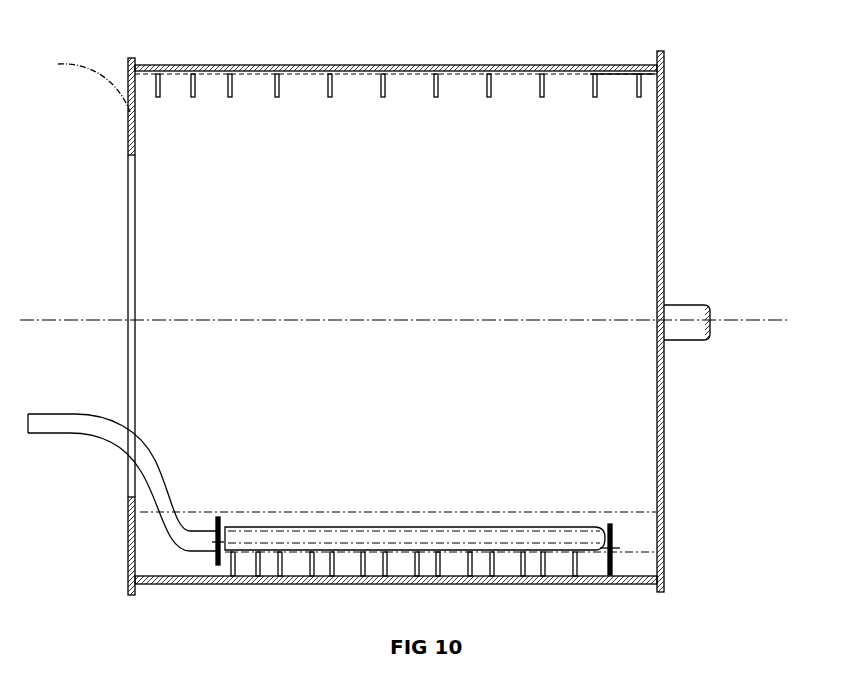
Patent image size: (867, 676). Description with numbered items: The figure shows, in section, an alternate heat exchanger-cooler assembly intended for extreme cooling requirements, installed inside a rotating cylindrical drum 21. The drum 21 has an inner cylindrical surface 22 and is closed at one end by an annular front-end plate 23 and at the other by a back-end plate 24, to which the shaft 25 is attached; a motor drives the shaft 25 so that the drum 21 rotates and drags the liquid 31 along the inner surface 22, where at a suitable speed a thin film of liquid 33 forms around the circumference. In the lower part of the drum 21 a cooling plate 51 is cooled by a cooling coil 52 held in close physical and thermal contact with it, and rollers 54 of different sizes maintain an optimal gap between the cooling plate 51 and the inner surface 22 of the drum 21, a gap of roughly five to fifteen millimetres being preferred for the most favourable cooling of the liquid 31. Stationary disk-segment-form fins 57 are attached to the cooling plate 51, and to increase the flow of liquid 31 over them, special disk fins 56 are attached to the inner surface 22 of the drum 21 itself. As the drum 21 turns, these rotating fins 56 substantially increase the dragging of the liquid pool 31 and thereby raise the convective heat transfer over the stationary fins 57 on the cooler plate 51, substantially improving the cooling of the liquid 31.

The cylindrical drum 21 is at (196, 64).
The inner cylindrical surface 22 is at (180, 76).
The annular front-end plate 23 is at (127, 125).
The back-end plate 24 is at (665, 49).
The shaft 25 is at (689, 301).
The liquid 31 is at (575, 508).
The thin film of liquid 33 is at (613, 74).
The cooling plate 51 is at (563, 550).
The cooling coil 52 is at (164, 518).
The rollers 54 is at (618, 535).
The disk fins 56 is at (439, 81).
The disk-segment-form fins 57 is at (361, 560).